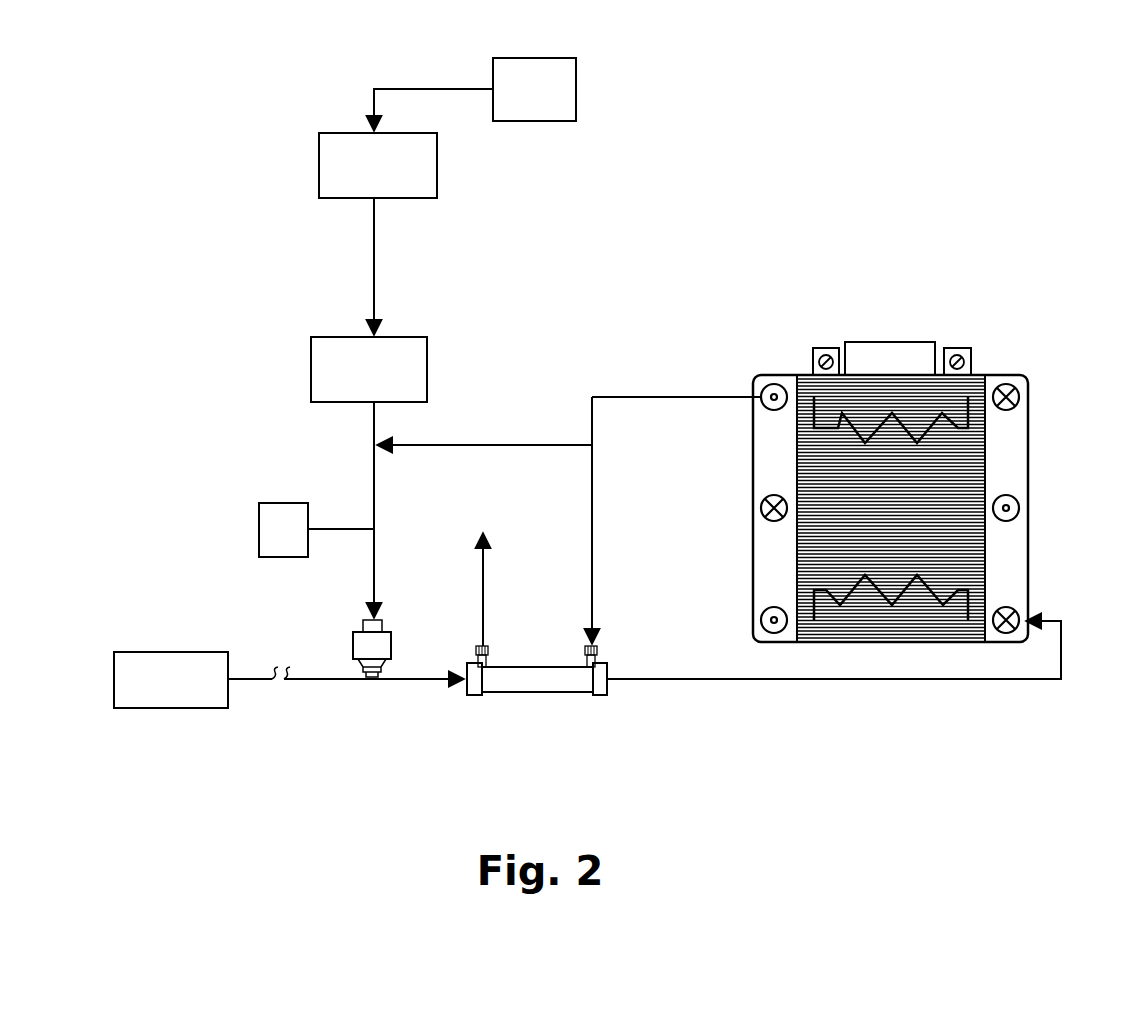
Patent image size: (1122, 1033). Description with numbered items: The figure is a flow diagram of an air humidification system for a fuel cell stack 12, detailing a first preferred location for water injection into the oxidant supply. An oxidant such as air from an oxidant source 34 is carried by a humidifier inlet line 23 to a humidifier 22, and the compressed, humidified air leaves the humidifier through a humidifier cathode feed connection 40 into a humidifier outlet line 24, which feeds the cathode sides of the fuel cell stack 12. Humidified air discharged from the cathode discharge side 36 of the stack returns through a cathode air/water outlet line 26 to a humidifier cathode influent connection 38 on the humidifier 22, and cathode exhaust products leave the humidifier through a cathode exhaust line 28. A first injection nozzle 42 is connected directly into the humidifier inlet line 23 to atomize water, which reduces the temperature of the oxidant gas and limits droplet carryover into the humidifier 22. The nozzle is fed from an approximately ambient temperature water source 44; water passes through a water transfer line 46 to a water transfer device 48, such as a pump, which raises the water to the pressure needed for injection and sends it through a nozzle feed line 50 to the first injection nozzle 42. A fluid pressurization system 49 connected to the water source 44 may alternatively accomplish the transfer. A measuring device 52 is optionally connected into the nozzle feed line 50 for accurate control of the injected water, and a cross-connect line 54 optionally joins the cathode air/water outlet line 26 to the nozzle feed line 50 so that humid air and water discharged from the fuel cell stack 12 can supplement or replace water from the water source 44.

The fuel cell stack 12 is at (888, 461).
The humidifier 22 is at (515, 667).
The humidifier inlet line 23 is at (295, 678).
The humidifier outlet line 24 is at (938, 682).
The cathode air/water outlet line 26 is at (725, 395).
The cathode exhaust line 28 is at (481, 598).
The oxidant source 34 is at (178, 650).
The cathode discharge side 36 is at (772, 380).
The humidifier cathode influent connection 38 is at (597, 647).
The humidifier cathode feed connection 40 is at (607, 668).
The first injection nozzle 42 is at (353, 633).
The water source 44 is at (322, 166).
The water transfer line 46 is at (373, 253).
The water transfer device 48 is at (313, 363).
The fluid pressurization system 49 is at (576, 70).
The nozzle feed line 50 is at (372, 478).
The measuring device 52 is at (259, 508).
The cross-connect line 54 is at (468, 445).